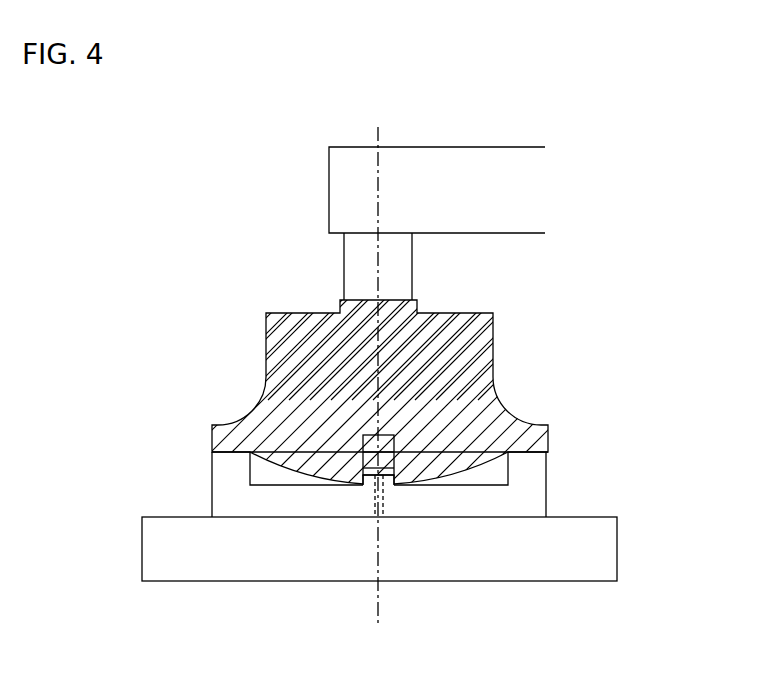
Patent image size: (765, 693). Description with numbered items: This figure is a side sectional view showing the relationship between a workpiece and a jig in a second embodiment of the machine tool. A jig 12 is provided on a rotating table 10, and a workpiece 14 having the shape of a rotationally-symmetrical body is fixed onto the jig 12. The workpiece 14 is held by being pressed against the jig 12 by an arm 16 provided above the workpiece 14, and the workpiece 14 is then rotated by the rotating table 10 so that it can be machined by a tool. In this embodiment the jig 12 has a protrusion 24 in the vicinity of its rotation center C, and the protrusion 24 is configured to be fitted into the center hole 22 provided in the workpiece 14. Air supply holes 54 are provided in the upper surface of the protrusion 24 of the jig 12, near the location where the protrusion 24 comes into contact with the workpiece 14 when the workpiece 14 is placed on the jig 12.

The rotating table 10 is at (605, 549).
The jig 12 is at (525, 499).
The workpiece 14 is at (280, 345).
The arm 16 is at (440, 147).
The center hole 22 is at (365, 448).
The protrusion 24 is at (366, 454).
The air supply holes 54 is at (383, 497).
The rotation center C is at (378, 265).